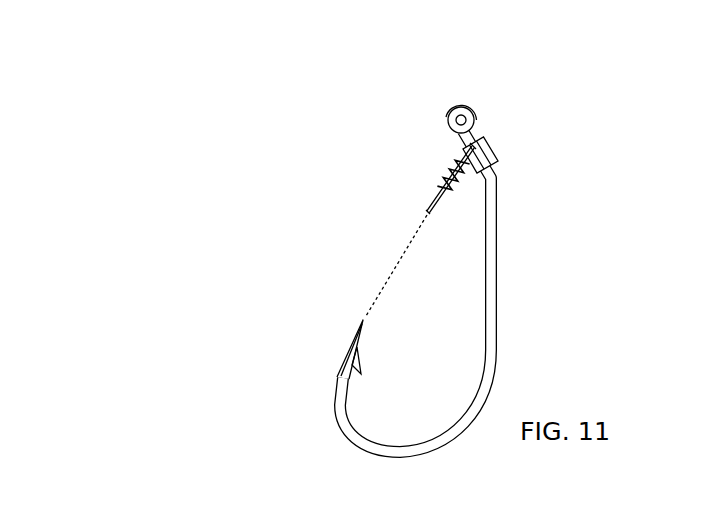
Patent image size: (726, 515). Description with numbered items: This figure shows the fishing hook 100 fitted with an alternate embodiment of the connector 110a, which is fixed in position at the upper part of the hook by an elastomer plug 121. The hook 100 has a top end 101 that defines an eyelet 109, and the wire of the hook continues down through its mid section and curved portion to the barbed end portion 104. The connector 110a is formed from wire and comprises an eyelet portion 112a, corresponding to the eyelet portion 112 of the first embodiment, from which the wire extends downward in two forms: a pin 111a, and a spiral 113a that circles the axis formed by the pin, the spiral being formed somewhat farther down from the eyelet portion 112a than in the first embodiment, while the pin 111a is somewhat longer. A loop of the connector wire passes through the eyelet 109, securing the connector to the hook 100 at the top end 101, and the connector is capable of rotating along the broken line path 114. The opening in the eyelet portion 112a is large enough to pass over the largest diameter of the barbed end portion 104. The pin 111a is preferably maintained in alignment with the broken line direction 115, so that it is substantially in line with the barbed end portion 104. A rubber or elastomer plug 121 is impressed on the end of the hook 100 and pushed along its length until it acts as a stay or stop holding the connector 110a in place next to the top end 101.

The fishing hook 100 is at (530, 131).
The top end 101 is at (486, 128).
The barbed end portion 104 is at (330, 400).
The eyelet 109 is at (472, 107).
The eyelet portion 112 is at (448, 118).
The pin axis / broken line path 114 is at (453, 85).
The elastomer plug 121 is at (498, 165).
The connector 110a is at (437, 170).
The eyelet portion 112a is at (470, 146).
The spiral 113a is at (435, 187).
The pin 111a is at (425, 213).
The broken line direction 115 is at (390, 265).